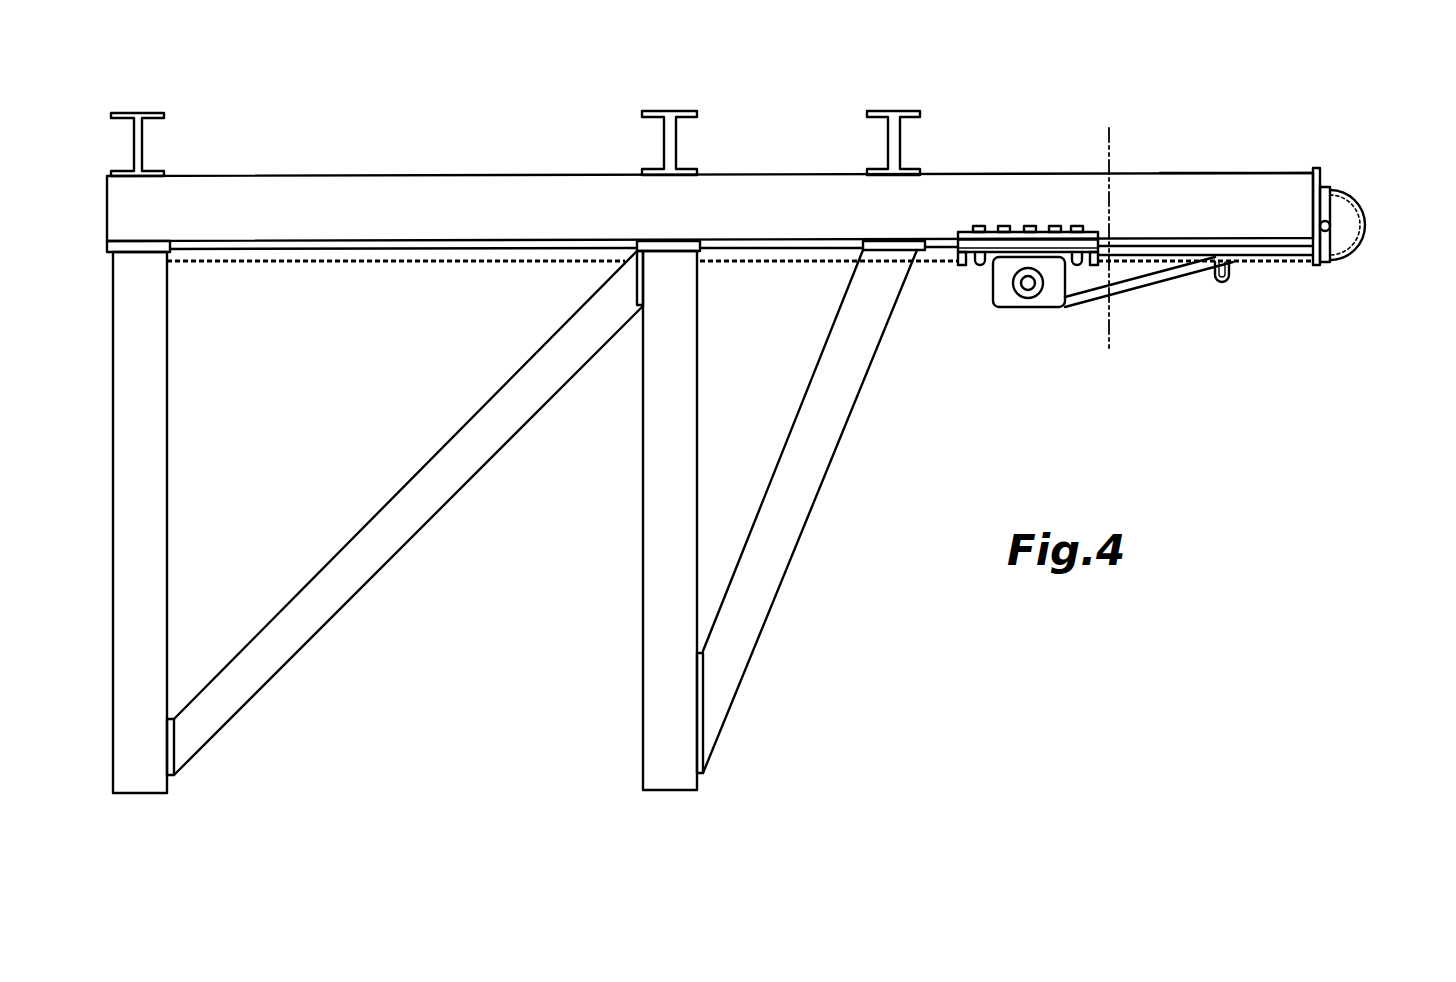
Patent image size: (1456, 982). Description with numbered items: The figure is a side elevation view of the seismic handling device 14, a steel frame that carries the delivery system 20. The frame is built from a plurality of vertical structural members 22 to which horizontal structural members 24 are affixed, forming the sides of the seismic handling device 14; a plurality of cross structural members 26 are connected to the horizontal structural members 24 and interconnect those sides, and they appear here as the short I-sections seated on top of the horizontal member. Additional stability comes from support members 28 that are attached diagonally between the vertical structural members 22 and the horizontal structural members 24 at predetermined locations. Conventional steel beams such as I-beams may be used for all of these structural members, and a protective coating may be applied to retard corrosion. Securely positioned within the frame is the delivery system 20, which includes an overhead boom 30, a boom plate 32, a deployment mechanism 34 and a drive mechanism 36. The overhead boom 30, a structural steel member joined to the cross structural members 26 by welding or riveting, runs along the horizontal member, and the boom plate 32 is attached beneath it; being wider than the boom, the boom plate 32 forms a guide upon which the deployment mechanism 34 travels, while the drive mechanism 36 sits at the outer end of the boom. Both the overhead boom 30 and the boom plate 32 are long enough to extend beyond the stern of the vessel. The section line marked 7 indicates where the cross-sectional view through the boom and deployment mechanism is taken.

The section line 7- 7 is at (1085, 128).
The seismic handling device 14 is at (760, 705).
The delivery system 20 is at (1318, 135).
The vertical structural members 22 is at (150, 793).
The horizontal structural members 24 is at (306, 175).
The cross structural members 26 is at (688, 112).
The support members 28 is at (293, 648).
The overhead boom 30 is at (1165, 173).
The boom plate 32 is at (1252, 247).
The deployment mechanism 34 is at (982, 285).
The drive mechanism 36 is at (1338, 200).